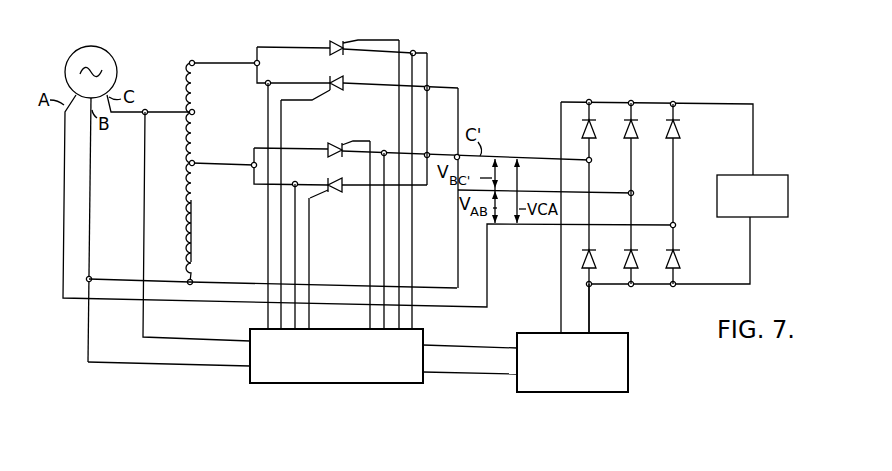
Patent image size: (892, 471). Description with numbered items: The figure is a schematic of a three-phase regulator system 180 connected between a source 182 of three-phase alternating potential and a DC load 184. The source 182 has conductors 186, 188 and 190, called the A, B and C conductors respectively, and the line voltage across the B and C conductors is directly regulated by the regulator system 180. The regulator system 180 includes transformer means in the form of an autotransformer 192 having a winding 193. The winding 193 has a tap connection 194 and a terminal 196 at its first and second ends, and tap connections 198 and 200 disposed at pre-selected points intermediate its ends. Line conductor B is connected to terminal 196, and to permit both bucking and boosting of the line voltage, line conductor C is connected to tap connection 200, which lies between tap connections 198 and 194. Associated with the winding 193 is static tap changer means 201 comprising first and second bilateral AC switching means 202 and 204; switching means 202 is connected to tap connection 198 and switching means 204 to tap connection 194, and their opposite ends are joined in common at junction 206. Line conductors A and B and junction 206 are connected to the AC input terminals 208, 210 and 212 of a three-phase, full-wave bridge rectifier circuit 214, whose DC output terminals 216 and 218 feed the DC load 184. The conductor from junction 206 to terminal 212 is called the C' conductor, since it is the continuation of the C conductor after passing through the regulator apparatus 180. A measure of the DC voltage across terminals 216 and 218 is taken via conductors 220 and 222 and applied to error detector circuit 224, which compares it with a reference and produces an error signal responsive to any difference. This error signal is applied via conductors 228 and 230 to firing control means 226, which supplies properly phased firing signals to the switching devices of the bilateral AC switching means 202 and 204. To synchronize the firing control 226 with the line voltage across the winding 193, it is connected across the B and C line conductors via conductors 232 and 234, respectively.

The regulator system 180 is at (273, 158).
The source of three-phase alternating potential 182 is at (66, 60).
The DC load 184 is at (770, 175).
The A conductor 186 is at (64, 157).
The B conductor 188 is at (100, 142).
The C conductor 190 is at (138, 106).
The autotransformer 192 is at (187, 186).
The winding 193 is at (190, 215).
The tap connection 194 is at (194, 64).
The terminal 196 is at (194, 279).
The tap connection 198 is at (194, 162).
The tap connection 200 is at (212, 110).
The static tap changer means 201 is at (420, 184).
The first bilateral AC switching means 202 is at (322, 173).
The second bilateral AC switching means 204 is at (320, 76).
The junction 206 is at (454, 152).
The AC input terminal 208 is at (675, 225).
The AC input terminal 210 is at (647, 191).
The AC input terminal 212 is at (605, 165).
The three-phase full-wave bridge rectifier circuit 214 is at (657, 202).
The DC output terminal 216 is at (695, 95).
The DC output terminal 218 is at (673, 286).
The conductor 220 is at (561, 300).
The conductor 222 is at (590, 297).
The error detector circuit 224 is at (618, 322).
The firing control means 226 is at (420, 328).
The conductor 228 is at (473, 345).
The conductor 230 is at (483, 368).
The conductor 232 is at (88, 315).
The conductor 234 is at (147, 318).